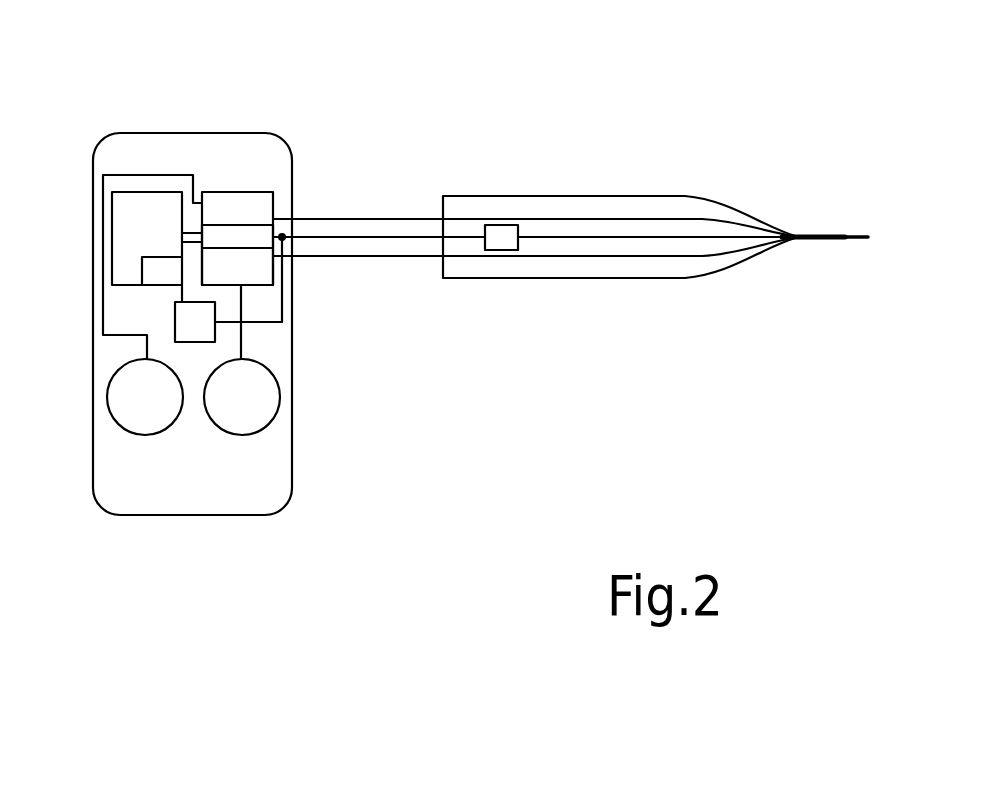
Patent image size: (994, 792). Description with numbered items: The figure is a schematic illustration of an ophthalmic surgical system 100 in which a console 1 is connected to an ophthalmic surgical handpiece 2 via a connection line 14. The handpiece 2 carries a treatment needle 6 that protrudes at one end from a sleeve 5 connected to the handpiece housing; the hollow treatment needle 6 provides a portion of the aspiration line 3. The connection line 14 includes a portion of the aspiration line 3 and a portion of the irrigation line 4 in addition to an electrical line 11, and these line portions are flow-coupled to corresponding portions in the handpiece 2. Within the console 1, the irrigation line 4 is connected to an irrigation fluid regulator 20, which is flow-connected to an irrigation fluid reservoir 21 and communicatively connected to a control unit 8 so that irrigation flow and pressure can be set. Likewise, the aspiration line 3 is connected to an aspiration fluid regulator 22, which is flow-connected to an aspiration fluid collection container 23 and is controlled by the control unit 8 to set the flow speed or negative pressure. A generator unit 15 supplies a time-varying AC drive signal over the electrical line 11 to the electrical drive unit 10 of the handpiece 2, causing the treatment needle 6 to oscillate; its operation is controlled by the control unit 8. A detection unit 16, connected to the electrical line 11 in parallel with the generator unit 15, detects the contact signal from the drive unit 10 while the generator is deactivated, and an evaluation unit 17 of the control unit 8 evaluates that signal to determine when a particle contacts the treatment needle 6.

The ophthalmic surgical system 100 is at (236, 79).
The console 1 is at (147, 133).
The ophthalmic surgical handpiece 2 is at (597, 195).
The aspiration line 3 is at (387, 256).
The irrigation line 4 is at (403, 219).
The sleeve 5 is at (820, 245).
The treatment needle 6 is at (853, 233).
The control unit 8 is at (167, 192).
The electrical drive unit 10 is at (505, 225).
The electrical line 11 is at (345, 237).
The connection line 14 is at (357, 303).
The generator unit 15 is at (223, 230).
The detection unit 16 is at (193, 342).
The evaluation unit 17 is at (162, 280).
The irrigation fluid regulator 20 is at (258, 213).
The irrigation fluid reservoir 21 is at (133, 397).
The aspiration fluid regulator 22 is at (253, 267).
The aspiration fluid collection container 23 is at (257, 397).